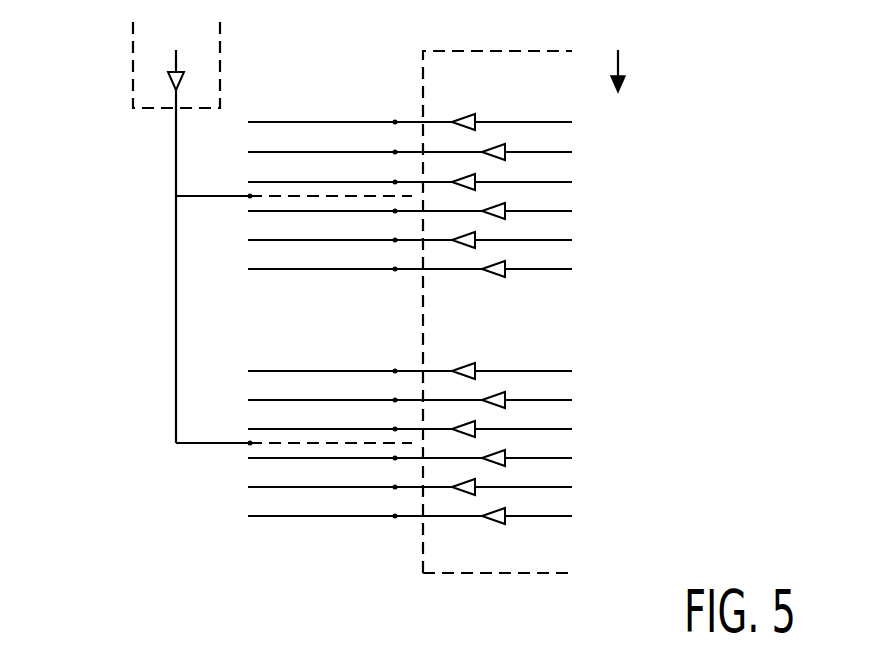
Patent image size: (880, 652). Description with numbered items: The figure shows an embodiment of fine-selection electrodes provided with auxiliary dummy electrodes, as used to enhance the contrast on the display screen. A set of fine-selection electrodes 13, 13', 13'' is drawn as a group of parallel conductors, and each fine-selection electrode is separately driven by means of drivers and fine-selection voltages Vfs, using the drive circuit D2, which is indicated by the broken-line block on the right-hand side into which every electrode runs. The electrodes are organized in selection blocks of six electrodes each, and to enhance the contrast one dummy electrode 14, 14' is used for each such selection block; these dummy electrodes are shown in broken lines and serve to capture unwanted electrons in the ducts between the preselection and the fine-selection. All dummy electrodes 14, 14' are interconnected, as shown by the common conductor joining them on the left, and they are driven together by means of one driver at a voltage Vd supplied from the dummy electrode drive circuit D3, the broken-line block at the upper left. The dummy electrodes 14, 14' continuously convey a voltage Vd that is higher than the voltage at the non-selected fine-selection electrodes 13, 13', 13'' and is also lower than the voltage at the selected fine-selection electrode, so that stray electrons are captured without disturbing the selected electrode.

The fine-selection electrode 13 is at (410, 86).
The fine-selection electrode 13' is at (410, 118).
The fine-selection electrode 13'' is at (410, 115).
The dummy electrode 14 is at (331, 136).
The dummy electrode 14' is at (331, 517).
The drive circuit D2 is at (450, 51).
The dummy electrode drive circuit D3 is at (133, 34).
The dummy electrode voltage Vd is at (178, 228).
The fine-selection voltage Vfs is at (616, 50).